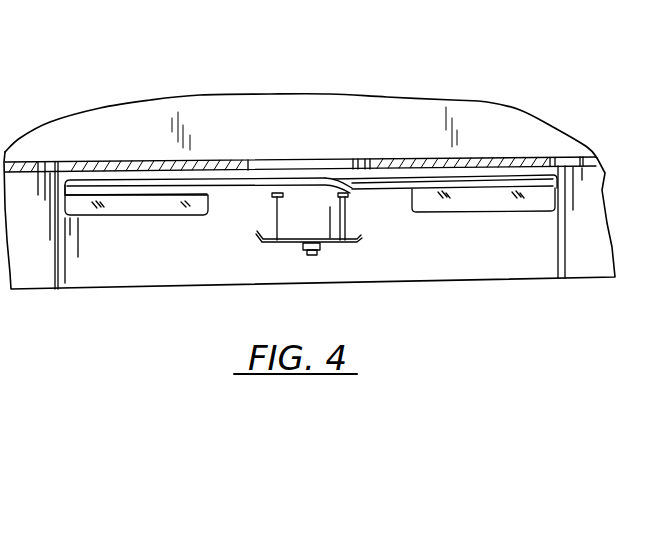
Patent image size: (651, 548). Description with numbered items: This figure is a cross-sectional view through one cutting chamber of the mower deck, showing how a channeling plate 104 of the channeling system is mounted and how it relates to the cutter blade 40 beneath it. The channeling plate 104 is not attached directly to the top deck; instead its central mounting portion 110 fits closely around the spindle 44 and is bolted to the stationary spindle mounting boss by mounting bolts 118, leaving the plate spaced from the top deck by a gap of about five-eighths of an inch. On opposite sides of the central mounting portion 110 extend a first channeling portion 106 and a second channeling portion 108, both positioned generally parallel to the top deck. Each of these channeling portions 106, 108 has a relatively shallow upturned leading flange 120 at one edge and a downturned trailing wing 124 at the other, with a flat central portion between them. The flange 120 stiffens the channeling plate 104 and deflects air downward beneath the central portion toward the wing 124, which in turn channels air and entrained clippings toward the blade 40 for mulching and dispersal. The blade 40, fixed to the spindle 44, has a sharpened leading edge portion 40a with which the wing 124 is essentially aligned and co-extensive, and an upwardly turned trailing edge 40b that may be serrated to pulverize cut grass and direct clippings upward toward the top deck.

The blade 40 is at (277, 243).
The sharpened leading edge portion 40a is at (358, 240).
The upwardly turned trailing edge 40b is at (258, 238).
The spindle 44 is at (346, 212).
The channeling plate 104 is at (355, 159).
The first channeling portion 106 is at (111, 155).
The second channeling portion 108 is at (517, 173).
The central mounting portion 110 is at (333, 165).
The mounting bolts 118 is at (276, 196).
The upturned leading flange 120 is at (152, 187).
The downturned trailing wing 124 is at (118, 207).